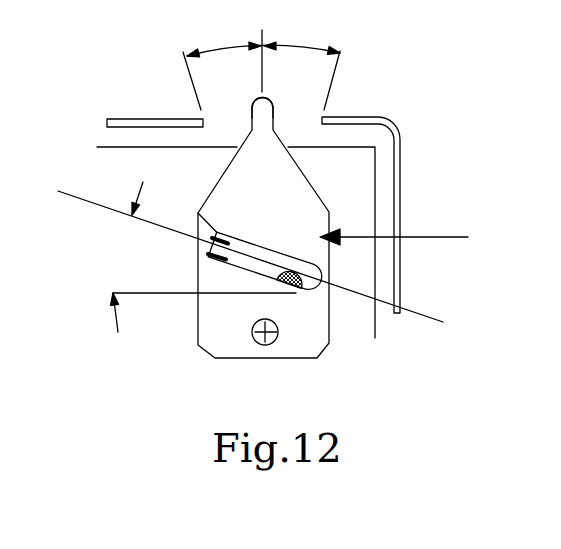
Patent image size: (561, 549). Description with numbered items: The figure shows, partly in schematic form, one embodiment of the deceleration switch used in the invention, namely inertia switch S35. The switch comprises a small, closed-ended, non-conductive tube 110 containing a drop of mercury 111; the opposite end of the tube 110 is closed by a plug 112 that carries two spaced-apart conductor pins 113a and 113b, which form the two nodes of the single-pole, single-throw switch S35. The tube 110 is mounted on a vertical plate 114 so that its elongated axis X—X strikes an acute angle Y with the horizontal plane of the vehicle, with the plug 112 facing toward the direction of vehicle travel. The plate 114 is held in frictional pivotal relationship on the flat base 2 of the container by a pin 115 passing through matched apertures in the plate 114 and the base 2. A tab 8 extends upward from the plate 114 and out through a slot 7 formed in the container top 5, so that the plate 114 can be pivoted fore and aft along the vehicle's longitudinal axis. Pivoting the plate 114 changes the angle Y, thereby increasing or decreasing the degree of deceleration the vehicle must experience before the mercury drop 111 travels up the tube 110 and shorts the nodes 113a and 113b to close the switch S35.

The base 2 is at (386, 195).
The top 5 is at (158, 119).
The slot 7 is at (300, 113).
The tab 8 is at (258, 105).
The tube 110 is at (254, 250).
The drop of mercury 111 is at (292, 275).
The plug 112 is at (212, 240).
The conductor pin 113a is at (214, 237).
The conductor pin 113b is at (209, 253).
The vertical plate 114 is at (283, 165).
The pin 115 is at (273, 337).
The inertia switch S35 is at (417, 239).
The elongated axis X— X is at (251, 252).
The acute angle Y is at (204, 257).